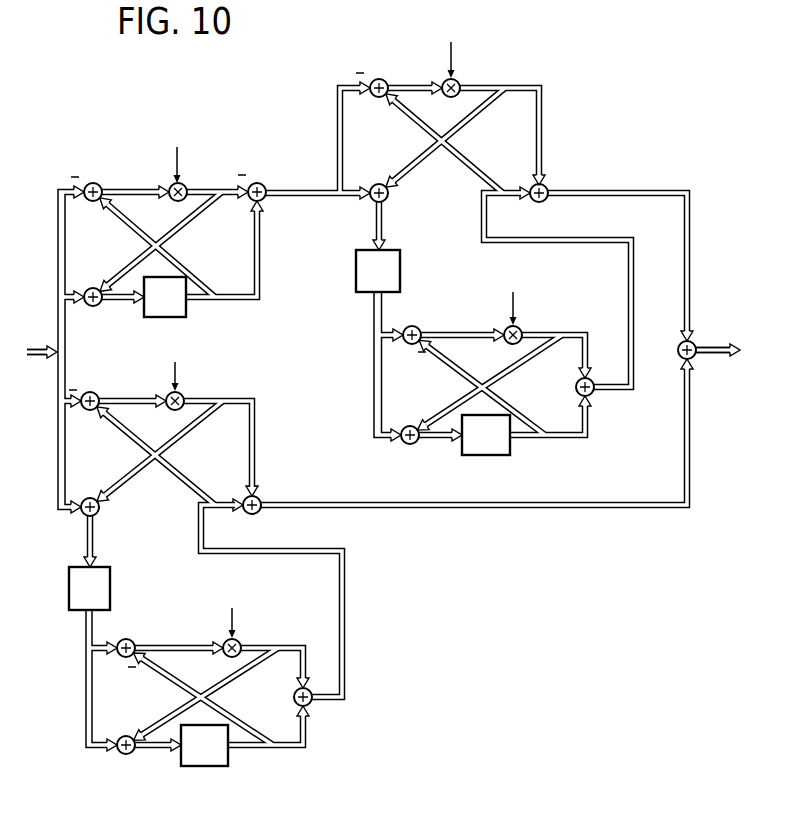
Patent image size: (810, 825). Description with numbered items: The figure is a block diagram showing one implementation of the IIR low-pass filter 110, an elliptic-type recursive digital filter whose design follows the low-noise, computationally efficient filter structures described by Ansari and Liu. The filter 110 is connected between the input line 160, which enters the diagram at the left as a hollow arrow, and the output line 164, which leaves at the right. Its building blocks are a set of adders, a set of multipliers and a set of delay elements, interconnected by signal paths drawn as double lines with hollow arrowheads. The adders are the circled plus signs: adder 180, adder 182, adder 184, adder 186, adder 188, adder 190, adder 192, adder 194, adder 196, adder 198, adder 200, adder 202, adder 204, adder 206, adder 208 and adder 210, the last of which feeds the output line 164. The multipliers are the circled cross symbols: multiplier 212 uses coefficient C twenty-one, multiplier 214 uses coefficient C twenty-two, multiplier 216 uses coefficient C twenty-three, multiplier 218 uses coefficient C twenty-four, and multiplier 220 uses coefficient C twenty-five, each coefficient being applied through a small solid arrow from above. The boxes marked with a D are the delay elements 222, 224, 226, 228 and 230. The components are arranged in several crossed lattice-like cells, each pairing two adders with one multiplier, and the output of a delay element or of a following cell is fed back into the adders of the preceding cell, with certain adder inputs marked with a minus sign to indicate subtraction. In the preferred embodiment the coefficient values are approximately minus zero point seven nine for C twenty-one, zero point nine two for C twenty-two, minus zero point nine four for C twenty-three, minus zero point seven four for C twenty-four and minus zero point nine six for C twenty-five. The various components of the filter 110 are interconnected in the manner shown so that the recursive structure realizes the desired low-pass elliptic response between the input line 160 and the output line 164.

The IIR low-pass filter 110 is at (458, 571).
The input line 160 is at (34, 345).
The output line 164 is at (715, 355).
The adder 180 is at (98, 184).
The adder 182 is at (263, 185).
The adder 184 is at (98, 305).
The adder 186 is at (95, 393).
The adder 188 is at (258, 498).
The adder 190 is at (97, 514).
The adder 192 is at (132, 640).
The adder 194 is at (310, 705).
The adder 196 is at (126, 754).
The adder 198 is at (385, 80).
The adder 200 is at (545, 185).
The adder 202 is at (387, 203).
The adder 204 is at (419, 327).
The adder 206 is at (590, 395).
The adder 208 is at (410, 445).
The adder 210 is at (694, 343).
The multiplier 212 is at (184, 186).
The multiplier 214 is at (458, 80).
The multiplier 216 is at (520, 327).
The multiplier 218 is at (182, 394).
The multiplier 220 is at (240, 641).
The delay element 222 is at (185, 311).
The delay element 224 is at (110, 581).
The delay element 226 is at (400, 265).
The delay element 228 is at (503, 456).
The delay element 230 is at (228, 762).